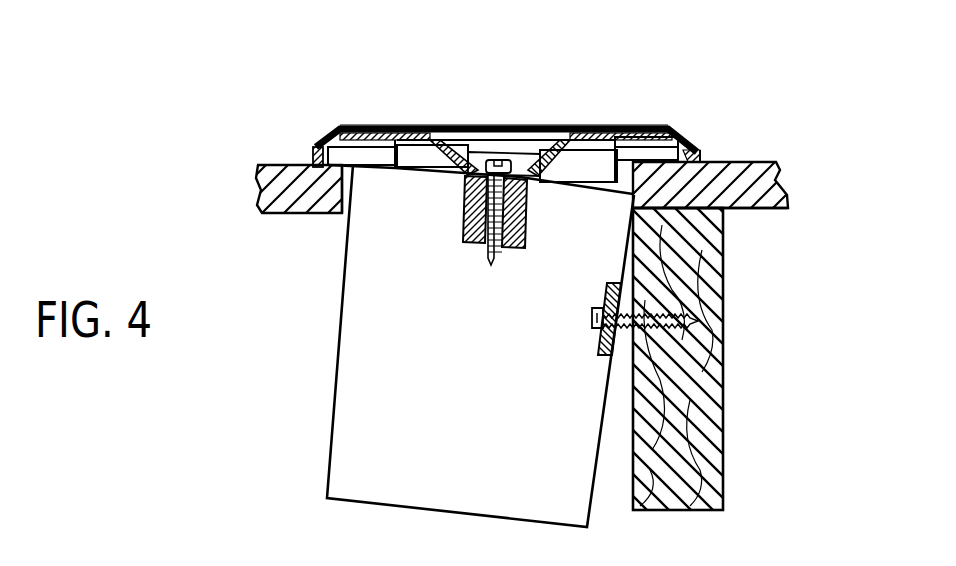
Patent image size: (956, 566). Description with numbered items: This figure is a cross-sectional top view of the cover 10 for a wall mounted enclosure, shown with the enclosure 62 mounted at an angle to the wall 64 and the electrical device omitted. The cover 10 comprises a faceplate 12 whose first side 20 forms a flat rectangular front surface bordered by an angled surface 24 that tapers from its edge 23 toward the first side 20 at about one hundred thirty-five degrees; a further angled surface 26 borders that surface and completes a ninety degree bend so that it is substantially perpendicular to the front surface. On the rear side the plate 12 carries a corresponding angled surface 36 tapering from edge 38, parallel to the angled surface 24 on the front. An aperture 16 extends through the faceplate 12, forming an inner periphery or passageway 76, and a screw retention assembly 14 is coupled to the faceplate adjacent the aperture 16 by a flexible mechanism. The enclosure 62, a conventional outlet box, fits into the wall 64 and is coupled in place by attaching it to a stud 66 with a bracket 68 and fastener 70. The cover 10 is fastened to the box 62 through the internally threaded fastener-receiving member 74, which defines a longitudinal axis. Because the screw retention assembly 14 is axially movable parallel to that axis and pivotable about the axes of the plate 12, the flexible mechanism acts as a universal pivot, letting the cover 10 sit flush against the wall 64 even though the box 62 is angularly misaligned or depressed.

The cover 10 is at (638, 78).
The faceplate 12 is at (575, 122).
The screw retention assembly 14 is at (473, 160).
The aperture 16 is at (525, 157).
The first side 20 is at (367, 125).
The edge 23 is at (313, 148).
The angled surface 24 is at (320, 143).
The angled surface 26 is at (312, 158).
The angled surface 36 is at (383, 166).
The edge 38 is at (335, 168).
The enclosure 62 is at (333, 400).
The wall 64 is at (780, 210).
The stud 66 is at (725, 405).
The bracket 68 is at (598, 350).
The fastener 70 is at (592, 321).
The fastener-receiving member 74 is at (467, 244).
The passageway 76 is at (632, 200).